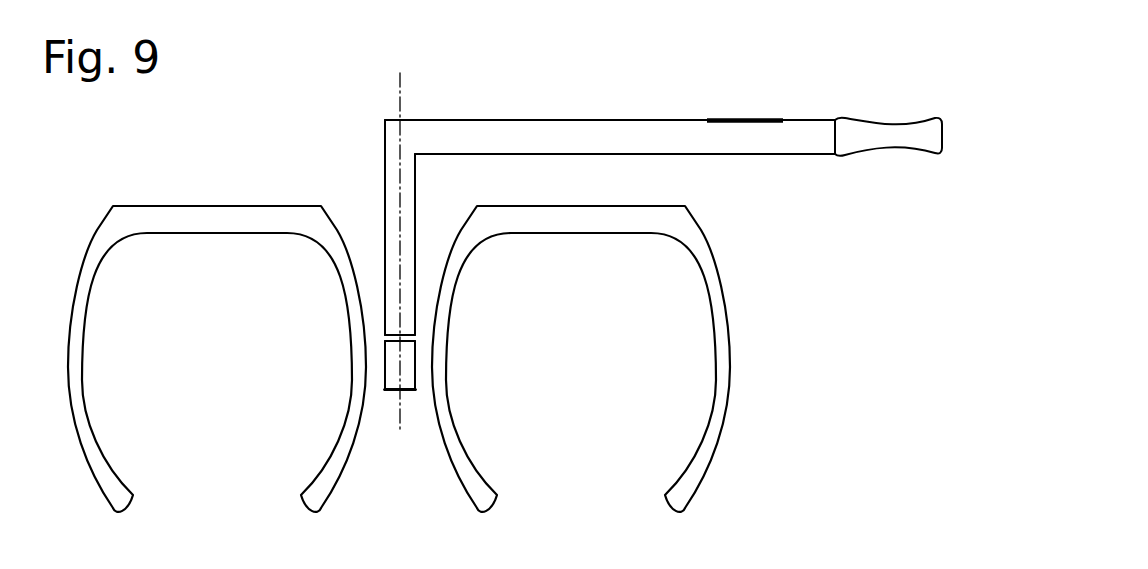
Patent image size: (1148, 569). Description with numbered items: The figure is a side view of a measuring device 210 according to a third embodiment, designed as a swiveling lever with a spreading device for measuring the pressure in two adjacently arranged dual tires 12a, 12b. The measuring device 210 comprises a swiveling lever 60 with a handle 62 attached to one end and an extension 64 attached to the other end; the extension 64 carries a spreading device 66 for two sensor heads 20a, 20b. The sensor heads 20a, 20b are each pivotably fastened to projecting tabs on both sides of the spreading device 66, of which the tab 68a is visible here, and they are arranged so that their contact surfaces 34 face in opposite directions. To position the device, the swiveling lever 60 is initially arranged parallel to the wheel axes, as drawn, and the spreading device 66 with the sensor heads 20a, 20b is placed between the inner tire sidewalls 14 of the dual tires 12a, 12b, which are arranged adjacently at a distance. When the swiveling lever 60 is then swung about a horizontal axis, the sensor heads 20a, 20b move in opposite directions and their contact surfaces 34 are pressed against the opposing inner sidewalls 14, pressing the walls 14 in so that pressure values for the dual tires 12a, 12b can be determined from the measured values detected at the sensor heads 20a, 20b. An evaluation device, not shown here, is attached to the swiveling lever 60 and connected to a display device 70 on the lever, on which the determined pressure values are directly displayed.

The dual tire 12a is at (227, 217).
The dual tire 12b is at (693, 250).
The inner tire sidewall 14 is at (350, 413).
The measuring device 210 is at (545, 97).
The extension 64 is at (392, 198).
The swiveling lever 60 is at (660, 133).
The display device 70 is at (767, 103).
The handle 62 is at (878, 133).
The projecting tab 68a is at (404, 332).
The contact surface 34 is at (384, 357).
The spreading device 66 is at (332, 335).
The sensor head 20a is at (396, 382).
The sensor head 20b is at (396, 382).